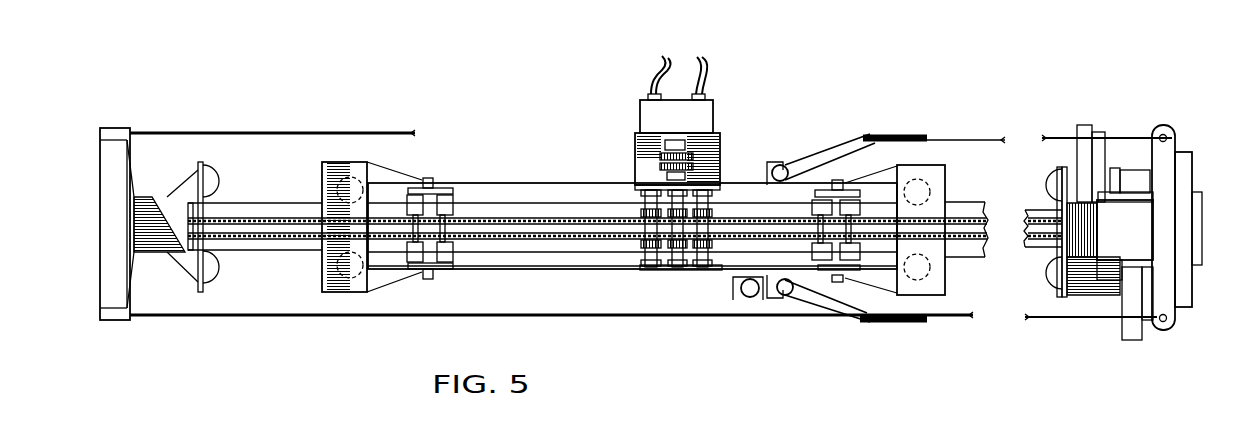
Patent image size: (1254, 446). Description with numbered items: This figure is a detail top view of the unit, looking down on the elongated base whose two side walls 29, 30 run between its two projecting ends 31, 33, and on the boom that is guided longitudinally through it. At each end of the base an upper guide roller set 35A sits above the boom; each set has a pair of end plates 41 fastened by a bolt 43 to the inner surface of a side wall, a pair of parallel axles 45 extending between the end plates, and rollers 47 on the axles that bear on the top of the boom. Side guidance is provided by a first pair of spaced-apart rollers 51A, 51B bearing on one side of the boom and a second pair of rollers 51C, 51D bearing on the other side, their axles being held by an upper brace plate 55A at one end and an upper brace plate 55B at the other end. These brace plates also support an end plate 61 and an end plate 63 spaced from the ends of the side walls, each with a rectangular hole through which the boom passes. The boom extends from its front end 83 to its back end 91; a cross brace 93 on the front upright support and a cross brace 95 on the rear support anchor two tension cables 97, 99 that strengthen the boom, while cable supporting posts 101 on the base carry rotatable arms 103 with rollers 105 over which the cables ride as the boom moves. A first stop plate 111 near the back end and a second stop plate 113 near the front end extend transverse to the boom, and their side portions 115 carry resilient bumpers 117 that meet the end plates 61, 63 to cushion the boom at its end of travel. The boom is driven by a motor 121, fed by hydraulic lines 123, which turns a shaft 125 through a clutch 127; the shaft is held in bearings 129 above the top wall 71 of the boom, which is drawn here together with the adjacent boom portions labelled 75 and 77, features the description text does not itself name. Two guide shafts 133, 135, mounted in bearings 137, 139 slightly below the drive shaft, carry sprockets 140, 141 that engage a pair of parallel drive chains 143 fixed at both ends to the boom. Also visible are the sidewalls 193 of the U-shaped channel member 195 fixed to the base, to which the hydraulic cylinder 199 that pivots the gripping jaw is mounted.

The side wall 29 is at (548, 270).
The side wall 30 is at (552, 183).
The end of base 31 is at (318, 177).
The end of base 33 is at (949, 172).
The upper guide roller set 35A is at (453, 188).
The end plate 41 is at (860, 190).
The bolt 43 is at (840, 180).
The axle 45 is at (822, 221).
The roller 47 is at (855, 204).
The side guide roller 51A is at (353, 180).
The side guide roller 51B is at (914, 180).
The side guide roller 51C is at (350, 278).
The side guide roller 51D is at (915, 280).
The upper brace plate 55A is at (353, 221).
The upper brace plate 55B is at (919, 219).
The end plate 61 is at (322, 270).
The end plate 63 is at (945, 272).
The top wall of boom 71 is at (159, 224).
The rod guide 75 is at (240, 255).
The rod guide 77 is at (250, 203).
The front end of boom 83 is at (1200, 226).
The back end of boom 91 is at (96, 248).
The cross brace 93 is at (1170, 140).
The cross brace 95 is at (117, 178).
The tension cable 97 is at (176, 315).
The tension cable 99 is at (222, 133).
The cable supporting post 101 is at (774, 160).
The rotatable arm 103 is at (838, 132).
The roller 105 is at (853, 322).
The first stop plate 111 is at (209, 162).
The second stop plate 113 is at (1056, 288).
The side portion 115 is at (197, 170).
The resilient bumper 117 is at (220, 178).
The motor 121 is at (713, 114).
The hydraulic lines 123 is at (695, 70).
The shaft 125 is at (650, 208).
The clutch 127 is at (660, 164).
The bearing 129 is at (705, 176).
The guide shaft 133 is at (645, 248).
The guide shaft 135 is at (710, 247).
The bearing 137 is at (635, 190).
The bearing 139 is at (712, 194).
The sprocket 140 is at (635, 214).
The sprocket 141 is at (714, 216).
The drive chain 143 is at (290, 226).
The sidewall of channel member 193 is at (733, 300).
The U-shaped channel member 195 is at (727, 281).
The hydraulic cylinder 199 is at (750, 300).